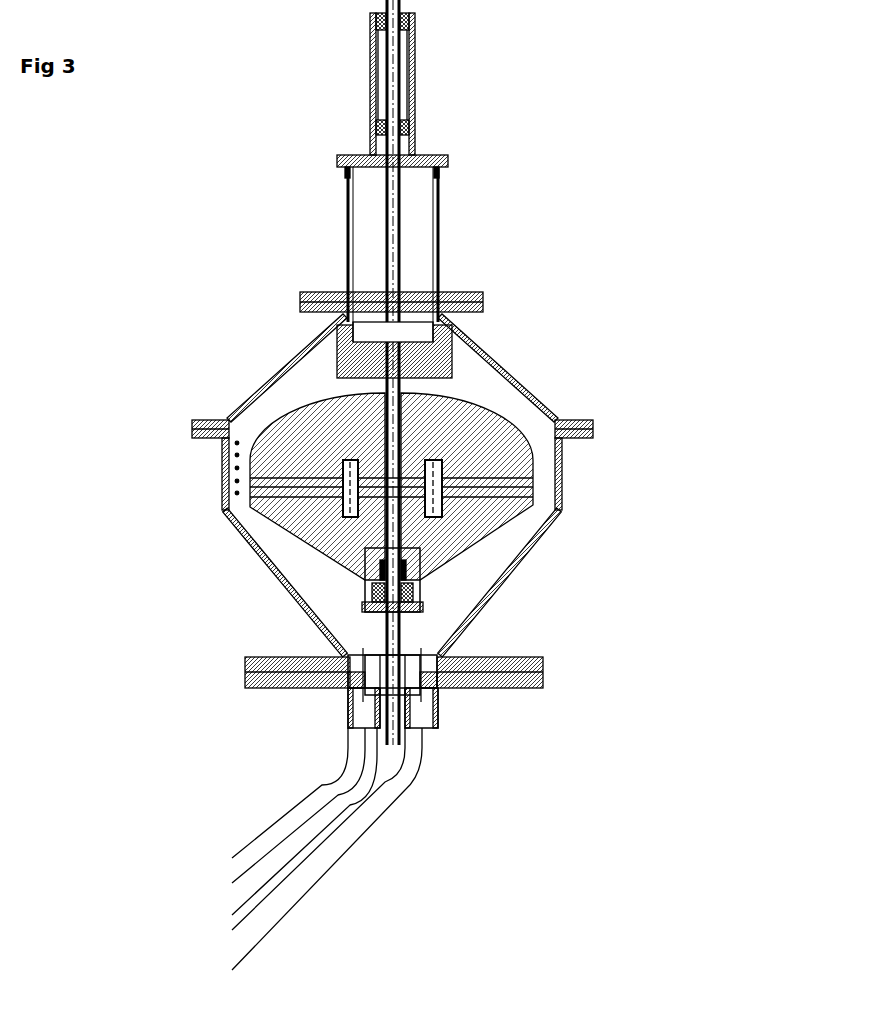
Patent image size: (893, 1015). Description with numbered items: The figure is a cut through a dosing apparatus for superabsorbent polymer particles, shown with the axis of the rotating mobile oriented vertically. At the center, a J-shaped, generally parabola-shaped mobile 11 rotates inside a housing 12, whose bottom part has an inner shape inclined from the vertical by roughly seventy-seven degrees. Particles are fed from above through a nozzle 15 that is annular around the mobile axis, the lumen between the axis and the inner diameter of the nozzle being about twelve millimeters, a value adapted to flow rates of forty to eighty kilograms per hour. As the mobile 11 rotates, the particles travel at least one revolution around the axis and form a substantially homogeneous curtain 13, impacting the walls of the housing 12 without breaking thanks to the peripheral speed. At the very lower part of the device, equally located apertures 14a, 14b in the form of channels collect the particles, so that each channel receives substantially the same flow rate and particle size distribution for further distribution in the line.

The mobile 11 is at (530, 463).
The housing 12 is at (525, 382).
The curtain 13 is at (228, 475).
The aperture 14a is at (350, 705).
The aperture 14b is at (438, 692).
The nozzle 15 is at (408, 380).